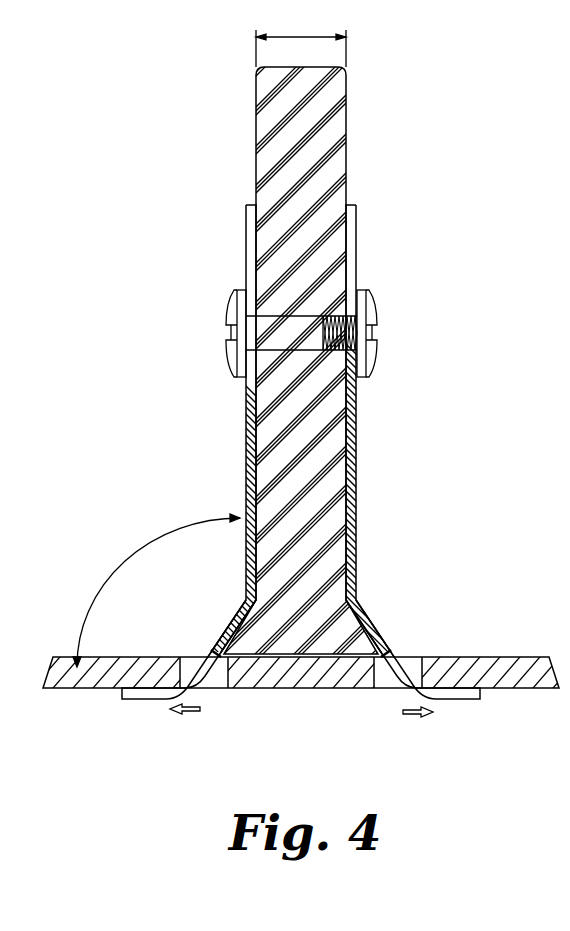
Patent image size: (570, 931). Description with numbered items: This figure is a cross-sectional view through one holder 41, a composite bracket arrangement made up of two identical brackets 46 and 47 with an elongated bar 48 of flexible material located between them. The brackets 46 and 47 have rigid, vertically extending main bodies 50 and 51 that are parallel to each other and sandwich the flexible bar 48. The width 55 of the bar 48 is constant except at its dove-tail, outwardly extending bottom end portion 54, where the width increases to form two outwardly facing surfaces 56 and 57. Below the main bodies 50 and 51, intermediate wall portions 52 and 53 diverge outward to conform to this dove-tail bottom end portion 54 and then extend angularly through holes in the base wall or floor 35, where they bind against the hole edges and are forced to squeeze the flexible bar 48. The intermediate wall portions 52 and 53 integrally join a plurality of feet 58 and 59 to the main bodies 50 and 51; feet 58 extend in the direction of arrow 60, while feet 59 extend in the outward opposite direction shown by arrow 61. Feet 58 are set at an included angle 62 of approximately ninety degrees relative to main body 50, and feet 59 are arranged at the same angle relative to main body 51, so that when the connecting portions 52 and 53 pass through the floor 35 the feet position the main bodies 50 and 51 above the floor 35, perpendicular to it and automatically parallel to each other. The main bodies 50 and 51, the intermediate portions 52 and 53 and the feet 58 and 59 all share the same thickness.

The holder 41 is at (472, 183).
The elongated bar 48 is at (292, 128).
The width of bar 55 is at (300, 36).
The bracket 46 is at (246, 275).
The bracket 47 is at (358, 247).
The main body 50 is at (257, 438).
The main body 51 is at (357, 435).
The intermediate wall portion 52 is at (244, 610).
The outwardly facing surface 56 is at (237, 623).
The bottom end portion 54 is at (242, 638).
The outwardly facing surface 57 is at (362, 615).
The intermediate wall portion 53 is at (377, 637).
The floor 35 is at (505, 657).
The feet 58 is at (143, 699).
The feet 59 is at (465, 705).
The arrow 60 is at (190, 714).
The arrow 61 is at (415, 720).
The included angle 62 is at (110, 585).